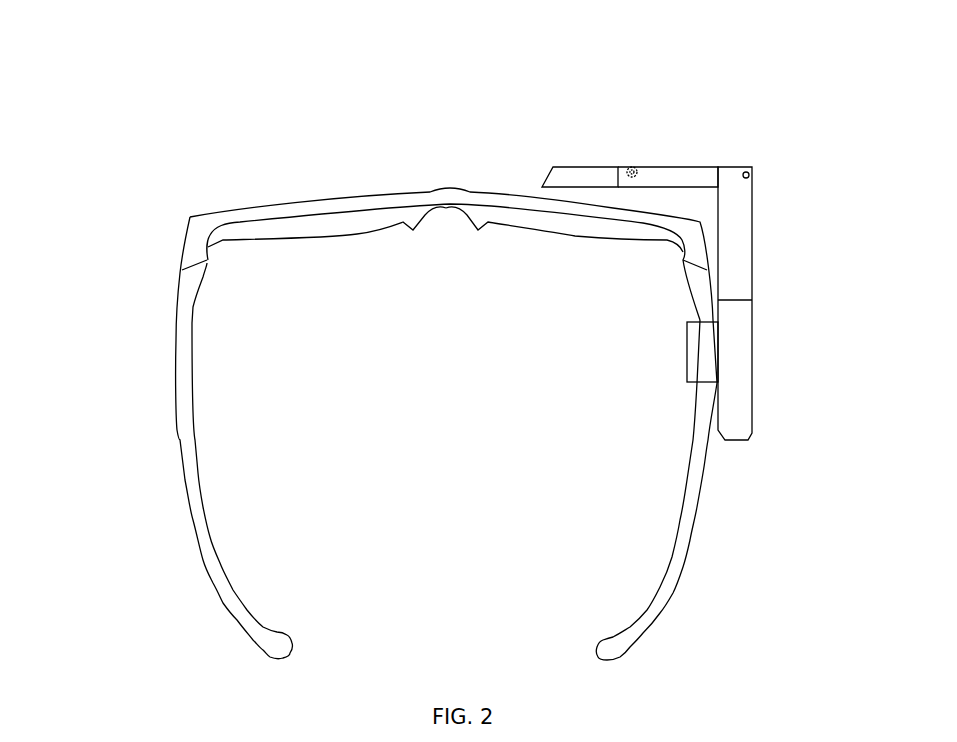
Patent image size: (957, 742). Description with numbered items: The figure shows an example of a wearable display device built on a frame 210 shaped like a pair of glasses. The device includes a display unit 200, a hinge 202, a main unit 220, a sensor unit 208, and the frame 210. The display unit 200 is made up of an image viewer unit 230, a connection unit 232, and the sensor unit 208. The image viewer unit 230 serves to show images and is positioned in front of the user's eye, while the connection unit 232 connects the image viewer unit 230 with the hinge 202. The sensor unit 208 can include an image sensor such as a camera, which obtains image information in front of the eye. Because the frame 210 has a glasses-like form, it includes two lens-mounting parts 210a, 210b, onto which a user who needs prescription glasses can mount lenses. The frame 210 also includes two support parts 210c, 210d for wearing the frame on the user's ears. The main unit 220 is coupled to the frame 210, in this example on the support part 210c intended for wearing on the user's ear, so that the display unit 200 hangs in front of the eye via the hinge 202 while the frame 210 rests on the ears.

The display unit 200 is at (707, 225).
The hinge 202 is at (750, 175).
The sensor unit 208 is at (634, 168).
The frame 210 is at (437, 431).
The lens-mounting part 210a is at (575, 235).
The lens-mounting part 210b is at (330, 235).
The support part 210c is at (700, 505).
The support part 210d is at (190, 457).
The main unit 220 is at (753, 261).
The image viewer unit 230 is at (583, 173).
The connection unit 232 is at (710, 171).